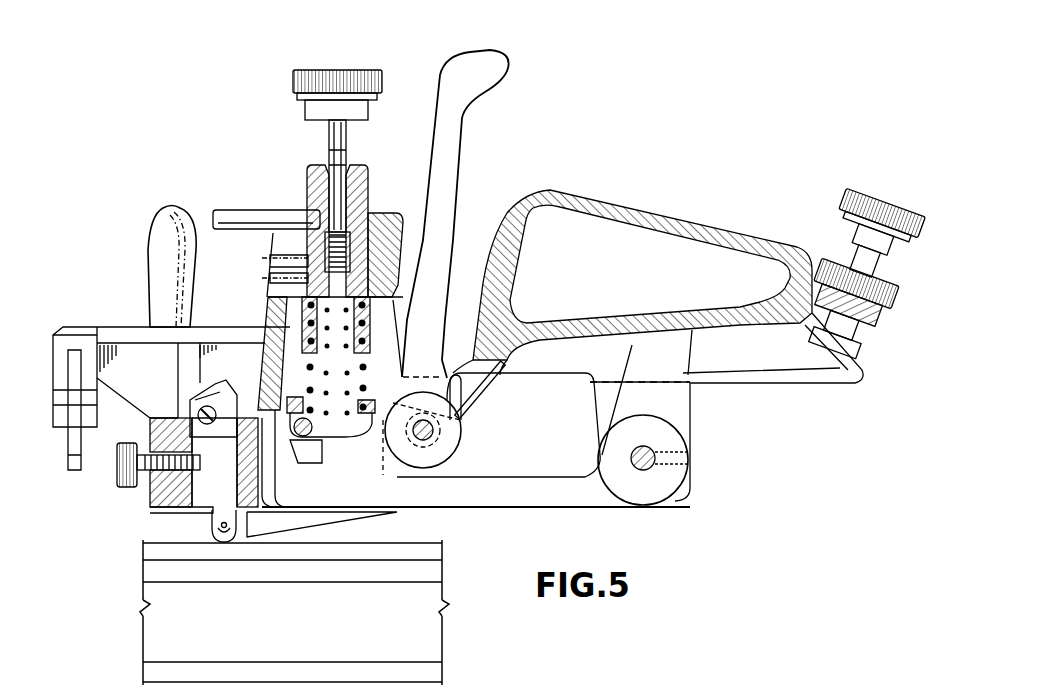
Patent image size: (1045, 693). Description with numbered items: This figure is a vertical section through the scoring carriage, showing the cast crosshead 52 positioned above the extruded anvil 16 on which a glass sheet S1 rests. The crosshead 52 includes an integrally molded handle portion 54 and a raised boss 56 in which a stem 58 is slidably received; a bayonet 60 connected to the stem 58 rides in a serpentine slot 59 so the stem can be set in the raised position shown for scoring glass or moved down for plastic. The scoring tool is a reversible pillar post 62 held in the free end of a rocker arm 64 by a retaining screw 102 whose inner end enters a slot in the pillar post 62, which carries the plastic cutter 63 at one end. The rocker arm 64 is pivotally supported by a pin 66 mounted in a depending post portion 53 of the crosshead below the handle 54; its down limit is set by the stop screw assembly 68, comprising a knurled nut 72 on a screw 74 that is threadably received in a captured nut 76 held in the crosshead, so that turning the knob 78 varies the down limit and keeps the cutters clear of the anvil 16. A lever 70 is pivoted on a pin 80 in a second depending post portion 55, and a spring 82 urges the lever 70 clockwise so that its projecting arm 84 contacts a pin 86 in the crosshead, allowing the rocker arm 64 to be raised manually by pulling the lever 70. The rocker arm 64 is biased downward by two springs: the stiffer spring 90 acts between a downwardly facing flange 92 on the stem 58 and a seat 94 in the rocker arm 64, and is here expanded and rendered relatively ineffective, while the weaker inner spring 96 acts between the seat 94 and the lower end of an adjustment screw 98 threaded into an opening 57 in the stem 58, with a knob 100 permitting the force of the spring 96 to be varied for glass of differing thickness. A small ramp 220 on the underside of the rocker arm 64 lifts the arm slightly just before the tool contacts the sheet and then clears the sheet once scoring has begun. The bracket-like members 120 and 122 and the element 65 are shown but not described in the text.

The anvil 16 is at (440, 600).
The crosshead 52 is at (512, 172).
The depending post portion 53 is at (592, 406).
The handle portion 54 is at (702, 210).
The second depending post portion 55 is at (462, 400).
The raised boss 56 is at (400, 214).
The opening 57 is at (358, 178).
The stem 58 is at (312, 165).
The slot 59 is at (270, 260).
The bayonet 60 is at (250, 210).
The pillar post 62 is at (208, 494).
The plastic cutter 63 is at (203, 392).
The rocker arm 64 is at (508, 508).
The roller 65 is at (234, 540).
The pin 66 is at (641, 471).
The stop screw assembly 68 is at (870, 182).
The lever 70 is at (463, 68).
The knurled nut 72 is at (890, 285).
The screw 74 is at (850, 256).
The captured nut 76 is at (890, 319).
The knob 78 is at (845, 190).
The pin 80 is at (430, 438).
The spring 82 is at (488, 380).
The projecting arm 84 is at (330, 468).
The pin 86 is at (285, 408).
The stiffer spring 90 is at (290, 322).
The downwardly facing flange 92 is at (300, 301).
The seat 94 is at (368, 392).
The inner spring 96 is at (352, 431).
The adjustment screw 98 is at (350, 138).
The knob 100 is at (295, 78).
The retaining screw 102 is at (118, 480).
The bracket 120 is at (80, 330).
The handle 122 is at (168, 208).
The ramp 220 is at (315, 513).
The glass sheet S1 is at (155, 543).